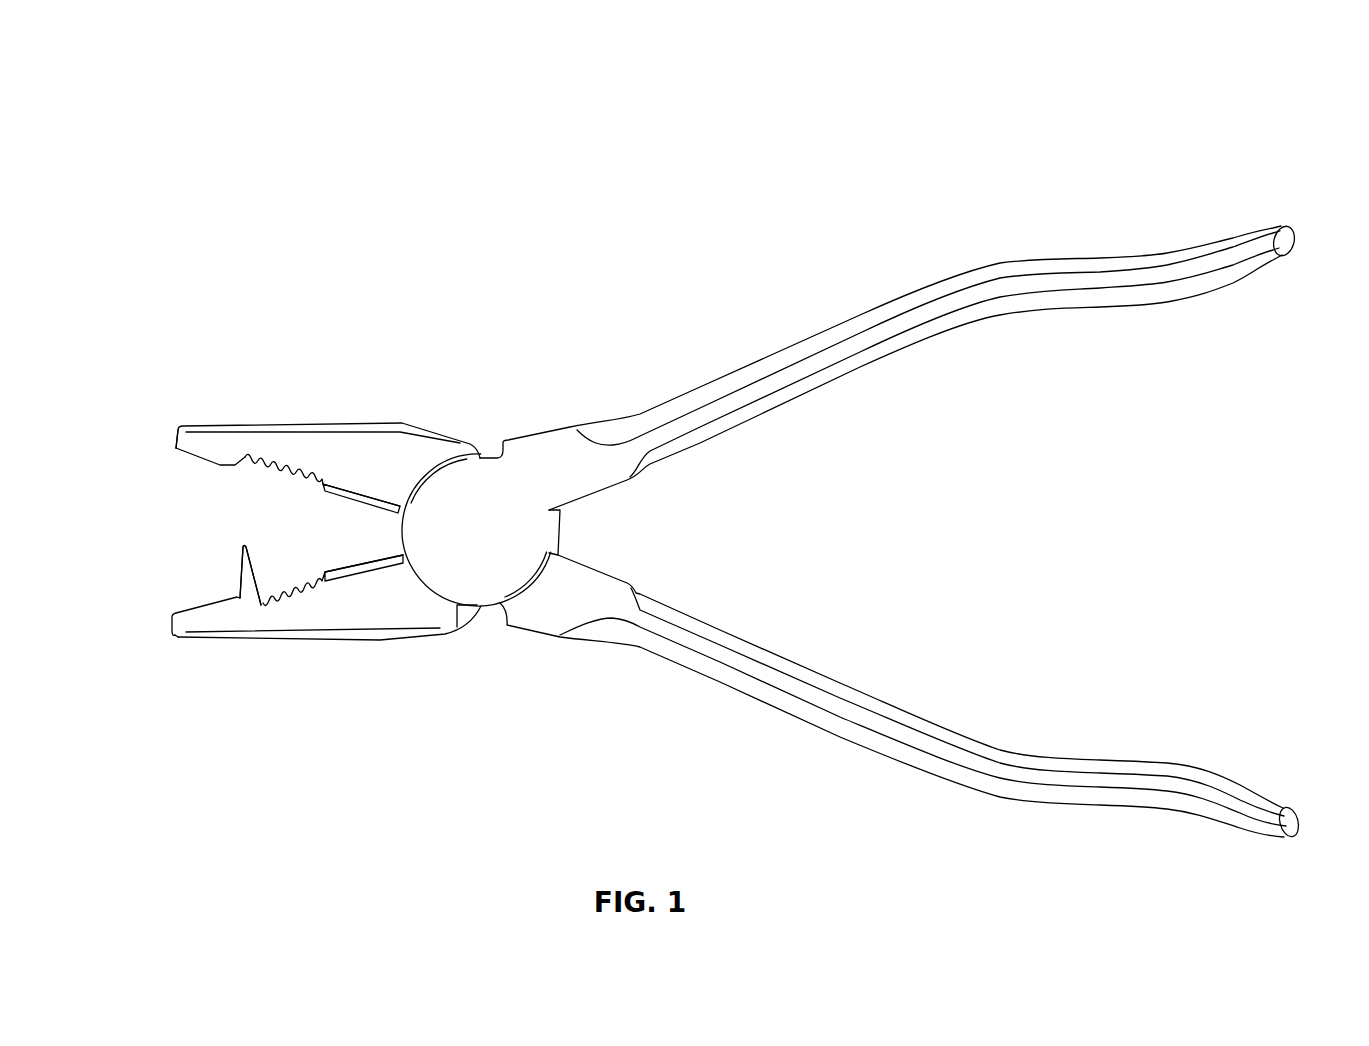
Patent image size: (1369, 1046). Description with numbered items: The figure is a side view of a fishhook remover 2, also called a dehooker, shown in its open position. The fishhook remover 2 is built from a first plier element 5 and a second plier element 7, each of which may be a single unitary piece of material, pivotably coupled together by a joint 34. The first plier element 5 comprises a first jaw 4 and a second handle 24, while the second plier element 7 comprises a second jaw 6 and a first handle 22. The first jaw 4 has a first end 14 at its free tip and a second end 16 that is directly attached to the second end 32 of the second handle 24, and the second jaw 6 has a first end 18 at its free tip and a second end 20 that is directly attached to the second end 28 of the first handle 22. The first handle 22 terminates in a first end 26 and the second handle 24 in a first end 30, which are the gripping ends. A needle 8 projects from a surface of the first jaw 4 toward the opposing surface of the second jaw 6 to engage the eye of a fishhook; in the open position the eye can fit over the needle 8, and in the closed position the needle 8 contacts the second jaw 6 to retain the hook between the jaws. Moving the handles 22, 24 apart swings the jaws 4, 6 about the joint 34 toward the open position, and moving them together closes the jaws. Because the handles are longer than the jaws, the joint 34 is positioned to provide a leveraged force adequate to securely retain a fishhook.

The fishhook remover 2 is at (239, 121).
The first jaw 4 is at (303, 618).
The first plier element 5 is at (828, 366).
The second jaw 6 is at (328, 434).
The second plier element 7 is at (287, 447).
The needle 8 is at (245, 572).
The first end of the first jaw 14 is at (208, 623).
The second end of the first jaw 16 is at (390, 607).
The first end of the second jaw 18 is at (185, 439).
The second end of the second jaw 20 is at (402, 456).
The first handle 22 is at (970, 765).
The second handle 24 is at (1008, 291).
The first end of the first handle 26 is at (1280, 820).
The second end of the first handle 28 is at (577, 603).
The first end of the second handle 30 is at (1280, 229).
The second end of the second handle 32 is at (550, 445).
The joint 34 is at (468, 545).